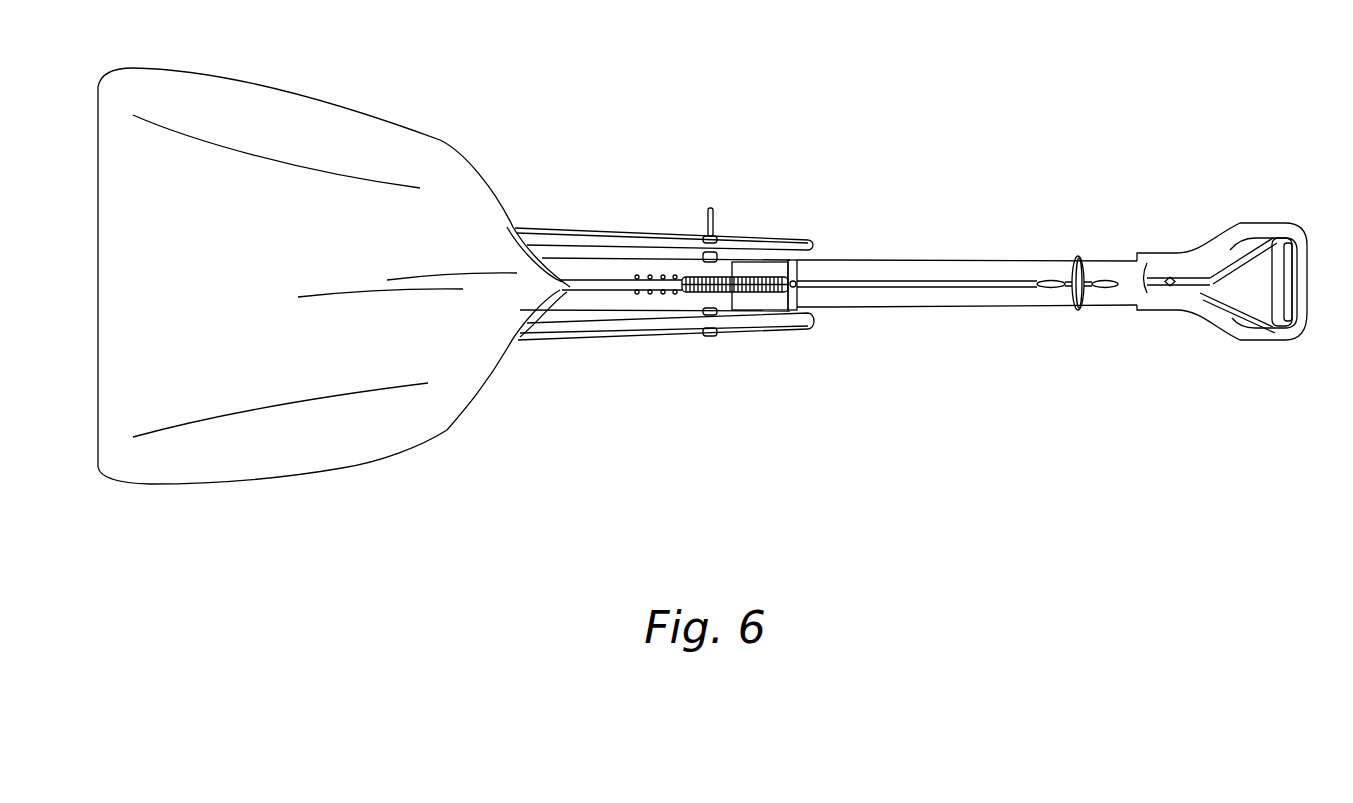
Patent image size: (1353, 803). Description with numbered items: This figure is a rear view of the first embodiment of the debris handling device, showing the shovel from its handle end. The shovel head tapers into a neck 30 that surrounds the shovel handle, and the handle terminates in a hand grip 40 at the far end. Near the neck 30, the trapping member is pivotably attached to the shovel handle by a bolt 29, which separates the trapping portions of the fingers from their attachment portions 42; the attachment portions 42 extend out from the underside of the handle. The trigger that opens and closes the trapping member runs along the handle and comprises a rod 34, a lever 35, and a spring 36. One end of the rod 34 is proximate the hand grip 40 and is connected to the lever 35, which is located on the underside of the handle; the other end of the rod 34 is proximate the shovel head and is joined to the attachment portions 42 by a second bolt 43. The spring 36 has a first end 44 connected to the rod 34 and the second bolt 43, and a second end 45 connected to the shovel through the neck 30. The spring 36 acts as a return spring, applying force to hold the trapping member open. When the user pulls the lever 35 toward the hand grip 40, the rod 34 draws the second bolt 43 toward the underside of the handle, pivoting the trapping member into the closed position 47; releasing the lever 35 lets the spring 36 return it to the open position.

The bolt 29 is at (707, 208).
The neck 30 is at (717, 235).
The rod 34 is at (1023, 285).
The lever 35 is at (1300, 327).
The spring 36 is at (715, 360).
The hand grip 40 is at (1270, 233).
The attachment portion 42 is at (778, 248).
The second bolt 43 is at (812, 258).
The first end of the spring 44 is at (772, 312).
The second end of the spring 45 is at (390, 276).
The closed position 47 is at (612, 232).